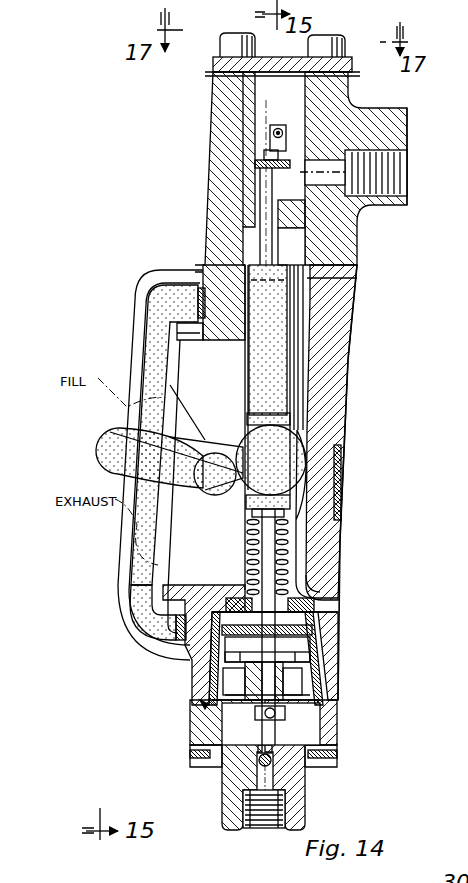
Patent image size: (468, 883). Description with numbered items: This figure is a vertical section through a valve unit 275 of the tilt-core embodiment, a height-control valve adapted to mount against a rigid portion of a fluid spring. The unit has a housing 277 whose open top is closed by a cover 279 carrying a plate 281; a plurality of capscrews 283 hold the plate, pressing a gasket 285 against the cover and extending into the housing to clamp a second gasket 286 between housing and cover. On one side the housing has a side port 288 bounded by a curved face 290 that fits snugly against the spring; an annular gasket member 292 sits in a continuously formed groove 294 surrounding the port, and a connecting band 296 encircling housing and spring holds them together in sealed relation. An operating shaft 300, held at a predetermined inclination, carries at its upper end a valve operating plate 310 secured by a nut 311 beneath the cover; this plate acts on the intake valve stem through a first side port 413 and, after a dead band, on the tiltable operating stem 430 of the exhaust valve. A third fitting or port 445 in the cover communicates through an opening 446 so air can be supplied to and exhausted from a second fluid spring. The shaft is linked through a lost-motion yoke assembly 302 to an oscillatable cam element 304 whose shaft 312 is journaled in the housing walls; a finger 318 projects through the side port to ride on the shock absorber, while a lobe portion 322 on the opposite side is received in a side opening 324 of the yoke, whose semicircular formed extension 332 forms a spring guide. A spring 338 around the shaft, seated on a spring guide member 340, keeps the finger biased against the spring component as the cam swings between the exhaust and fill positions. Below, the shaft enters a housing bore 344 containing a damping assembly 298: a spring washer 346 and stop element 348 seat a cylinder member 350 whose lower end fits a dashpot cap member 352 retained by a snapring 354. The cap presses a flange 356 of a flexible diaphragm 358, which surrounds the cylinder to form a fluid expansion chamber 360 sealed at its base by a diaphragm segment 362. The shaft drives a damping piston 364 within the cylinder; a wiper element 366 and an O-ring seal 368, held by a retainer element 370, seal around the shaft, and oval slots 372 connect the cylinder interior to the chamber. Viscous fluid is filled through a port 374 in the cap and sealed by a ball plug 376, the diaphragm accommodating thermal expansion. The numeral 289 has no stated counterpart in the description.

The valve unit 275 is at (352, 390).
The housing 277 is at (348, 366).
The cover 279 is at (236, 132).
The plate 281 is at (222, 63).
The capscrews 283 is at (240, 45).
The gasket 285 is at (343, 78).
The gasket 286 is at (332, 282).
The side port 288 is at (190, 343).
The adjacent figure numeral 289 is at (467, 852).
The curved face 290 is at (137, 319).
The annular gasket member 292 is at (160, 304).
The groove 294 is at (199, 286).
The connecting band 296 is at (342, 480).
The damping assembly 298 is at (282, 326).
The operating shaft 300 is at (290, 247).
The lost-motion yoke assembly 302 is at (243, 368).
The oscillatable cam element 304 is at (213, 443).
The valve operating plate 310 is at (260, 176).
The nut 311 is at (255, 164).
The shaft 312 is at (236, 490).
The finger 318 is at (125, 447).
The lobe portion 322 is at (265, 428).
The side opening 324 is at (297, 433).
The semicircular formed extension 332 is at (467, 838).
The spring 338 is at (288, 543).
The spring guide member 340 is at (304, 583).
The housing bore 344 is at (315, 627).
The spring washer 346 is at (318, 604).
The stop element 348 is at (176, 624).
The cylinder member 350 is at (315, 650).
The dashpot cap member 352 is at (216, 735).
The snapring 354 is at (338, 764).
The flange 356 is at (203, 704).
The flexible diaphragm 358 is at (322, 705).
The fluid expansion chamber 360 is at (212, 692).
The segment of the diaphragm 362 is at (238, 606).
The damping piston 364 is at (318, 670).
The wiper element 366 is at (280, 647).
The O-ring seal 368 is at (304, 604).
The retainer element 370 is at (173, 651).
The slots 372 is at (328, 688).
The port 374 is at (272, 777).
The ball plug 376 is at (258, 763).
The first side port 413 is at (262, 158).
The tiltable operating stem 430 is at (271, 136).
The third fitting or port 445 is at (404, 147).
The opening 446 is at (340, 150).